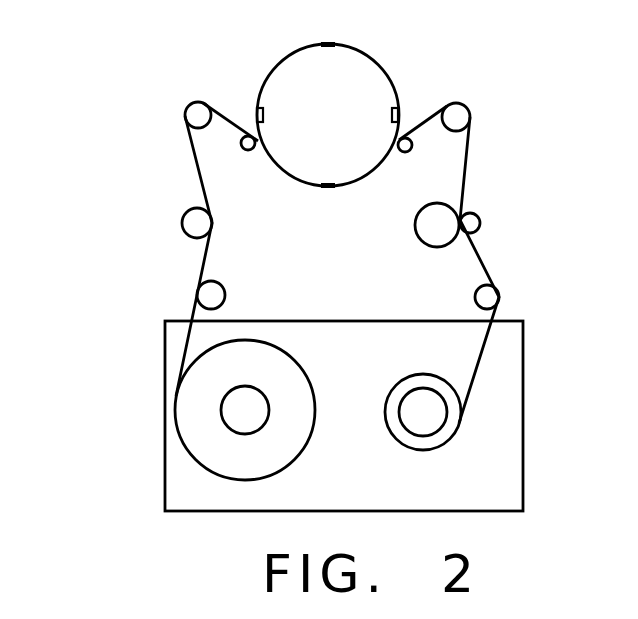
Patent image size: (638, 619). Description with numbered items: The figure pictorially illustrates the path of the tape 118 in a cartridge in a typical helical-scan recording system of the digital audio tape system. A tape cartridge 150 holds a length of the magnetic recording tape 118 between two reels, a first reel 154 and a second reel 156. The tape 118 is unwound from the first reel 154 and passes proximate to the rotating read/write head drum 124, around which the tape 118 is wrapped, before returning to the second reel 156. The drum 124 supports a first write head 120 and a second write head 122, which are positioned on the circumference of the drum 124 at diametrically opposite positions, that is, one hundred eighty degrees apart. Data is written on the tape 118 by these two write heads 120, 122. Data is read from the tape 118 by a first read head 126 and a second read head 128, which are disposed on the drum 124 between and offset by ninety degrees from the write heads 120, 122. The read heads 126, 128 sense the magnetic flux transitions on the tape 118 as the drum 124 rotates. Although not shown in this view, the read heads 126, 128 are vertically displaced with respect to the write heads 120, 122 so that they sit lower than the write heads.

The tape 118 is at (467, 173).
The first write head 120 is at (328, 187).
The second write head 122 is at (328, 47).
The drum 124 is at (383, 70).
The first read head 126 is at (258, 112).
The second read head 128 is at (398, 114).
The tape cartridge 150 is at (165, 367).
The first reel 154 is at (178, 433).
The second reel 156 is at (455, 433).